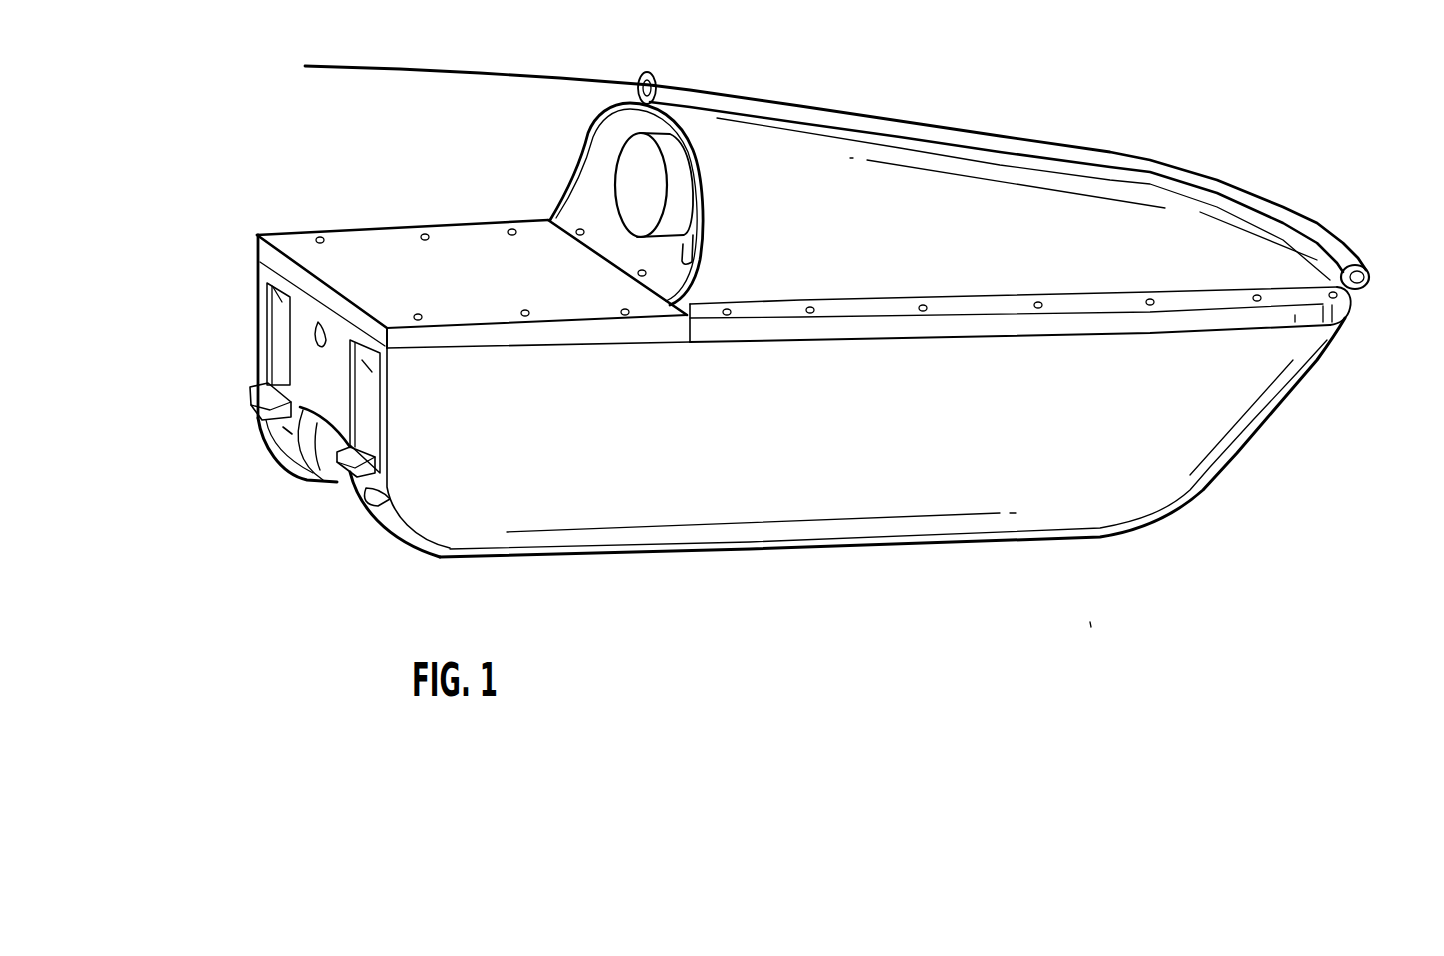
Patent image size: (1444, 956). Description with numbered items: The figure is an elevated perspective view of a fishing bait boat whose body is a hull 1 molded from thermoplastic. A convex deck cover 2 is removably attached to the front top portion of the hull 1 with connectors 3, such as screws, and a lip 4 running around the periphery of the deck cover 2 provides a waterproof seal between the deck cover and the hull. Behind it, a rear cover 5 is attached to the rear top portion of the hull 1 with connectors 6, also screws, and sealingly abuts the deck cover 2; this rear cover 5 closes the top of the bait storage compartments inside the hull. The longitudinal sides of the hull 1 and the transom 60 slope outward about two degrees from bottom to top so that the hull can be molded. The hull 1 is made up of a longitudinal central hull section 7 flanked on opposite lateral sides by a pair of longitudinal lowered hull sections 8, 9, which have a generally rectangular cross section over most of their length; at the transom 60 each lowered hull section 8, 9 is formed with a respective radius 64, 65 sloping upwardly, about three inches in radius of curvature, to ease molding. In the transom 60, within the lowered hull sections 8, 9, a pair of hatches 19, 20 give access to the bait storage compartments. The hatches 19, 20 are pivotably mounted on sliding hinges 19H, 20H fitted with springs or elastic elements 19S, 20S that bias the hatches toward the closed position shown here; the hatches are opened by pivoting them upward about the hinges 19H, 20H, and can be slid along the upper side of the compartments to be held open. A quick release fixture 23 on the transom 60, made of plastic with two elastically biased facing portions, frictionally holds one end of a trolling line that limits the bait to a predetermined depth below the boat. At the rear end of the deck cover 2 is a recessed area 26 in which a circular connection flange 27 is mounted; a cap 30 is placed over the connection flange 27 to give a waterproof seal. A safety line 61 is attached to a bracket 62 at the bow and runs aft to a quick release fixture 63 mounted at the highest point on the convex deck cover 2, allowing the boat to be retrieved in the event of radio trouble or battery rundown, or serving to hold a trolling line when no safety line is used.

The hull 1 is at (690, 517).
The convex deck cover 2 is at (1040, 170).
The connectors 3 is at (1038, 303).
The lip 4 is at (978, 330).
The rear cover 5 is at (375, 242).
The connectors 6 is at (507, 235).
The longitudinal central hull section 7 is at (322, 480).
The longitudinal lowered hull section 8 is at (290, 427).
The longitudinal lowered hull section 9 is at (390, 503).
The hatch 19 is at (262, 390).
The sliding hinge 19H is at (268, 304).
The spring or elastic element 19S is at (283, 292).
The hatch 20 is at (360, 452).
The sliding hinge 20H is at (365, 385).
The spring or elastic element 20S is at (365, 385).
The quick release fixture 23 is at (320, 343).
The recessed area 26 is at (600, 167).
The circular connection flange 27 is at (698, 268).
The cap 30 is at (633, 146).
The transom 60 is at (300, 323).
The safety line 61 is at (422, 43).
The bracket 62 is at (1372, 278).
The quick release fixture 63 is at (650, 77).
The radius 64 is at (283, 457).
The radius 65 is at (378, 527).